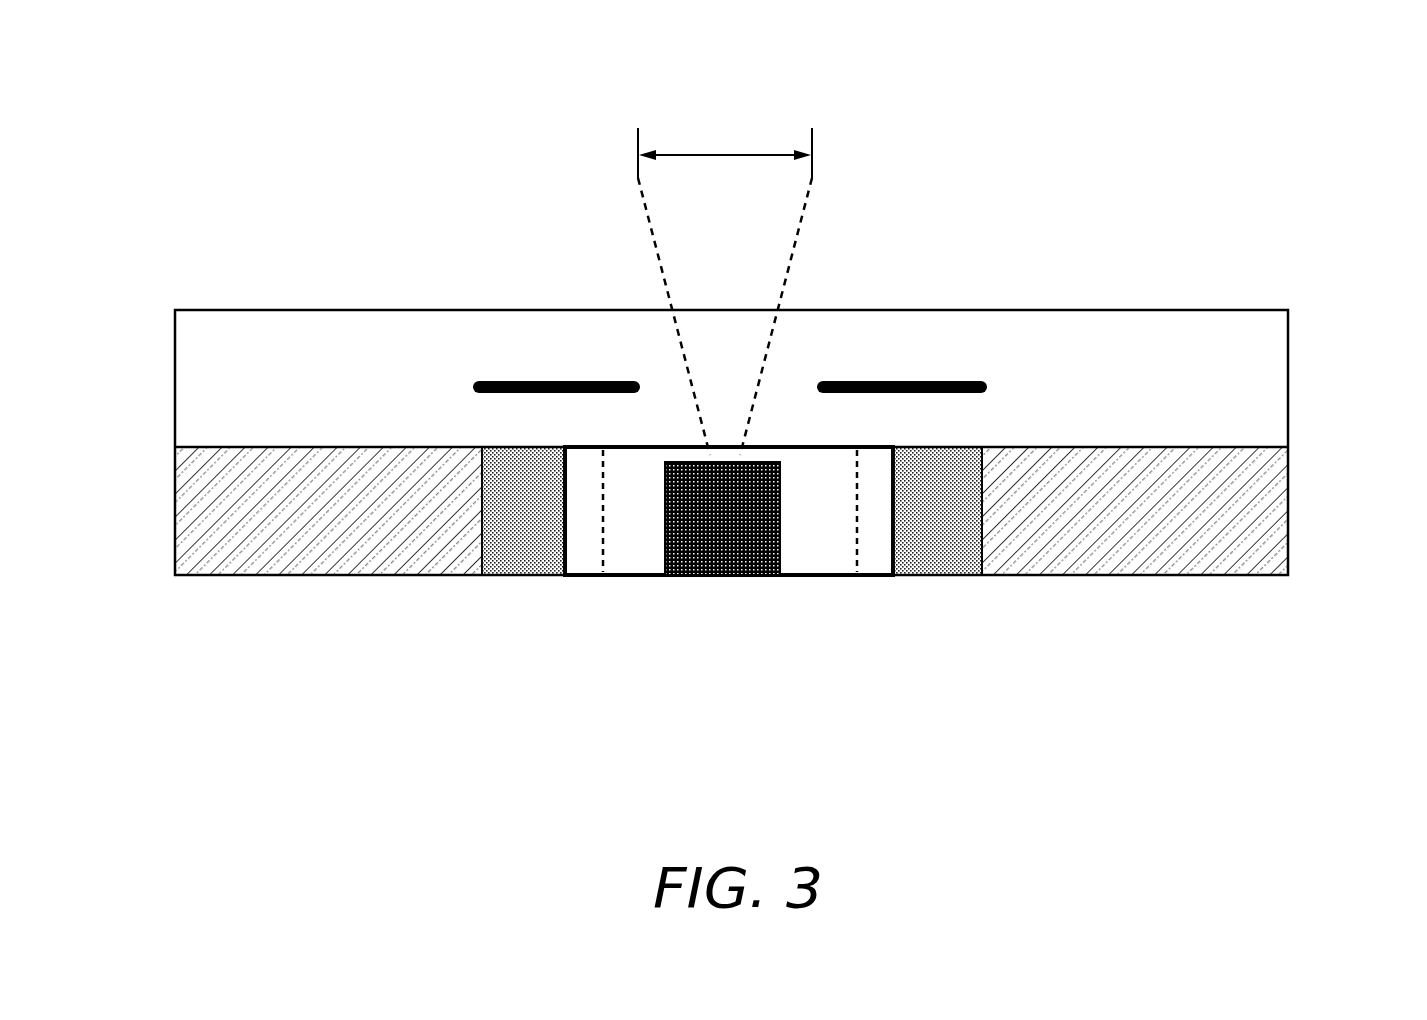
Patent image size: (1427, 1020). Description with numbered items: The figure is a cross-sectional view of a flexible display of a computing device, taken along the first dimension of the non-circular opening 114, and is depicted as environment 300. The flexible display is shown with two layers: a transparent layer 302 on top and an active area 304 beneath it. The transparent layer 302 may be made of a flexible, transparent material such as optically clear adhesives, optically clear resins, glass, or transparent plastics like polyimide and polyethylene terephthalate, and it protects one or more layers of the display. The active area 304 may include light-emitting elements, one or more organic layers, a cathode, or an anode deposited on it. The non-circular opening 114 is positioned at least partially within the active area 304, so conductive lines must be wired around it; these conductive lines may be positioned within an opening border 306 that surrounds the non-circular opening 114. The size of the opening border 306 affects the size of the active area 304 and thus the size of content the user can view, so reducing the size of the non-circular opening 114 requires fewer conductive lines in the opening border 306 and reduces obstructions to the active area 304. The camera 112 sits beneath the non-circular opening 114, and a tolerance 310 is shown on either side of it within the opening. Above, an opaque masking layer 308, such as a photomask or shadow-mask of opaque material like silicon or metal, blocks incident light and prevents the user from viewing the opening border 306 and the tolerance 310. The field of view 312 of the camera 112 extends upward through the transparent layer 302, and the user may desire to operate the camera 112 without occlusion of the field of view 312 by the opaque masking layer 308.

The environment 300 is at (166, 96).
The transparent layer 302 is at (1120, 383).
The active area 304 is at (1090, 510).
The opening border 306 is at (1025, 637).
The opaque masking layer 308 is at (985, 263).
The tolerance 310 is at (877, 510).
The field of view 312 is at (725, 155).
The camera 112 is at (722, 520).
The non-circular opening 114 is at (803, 578).